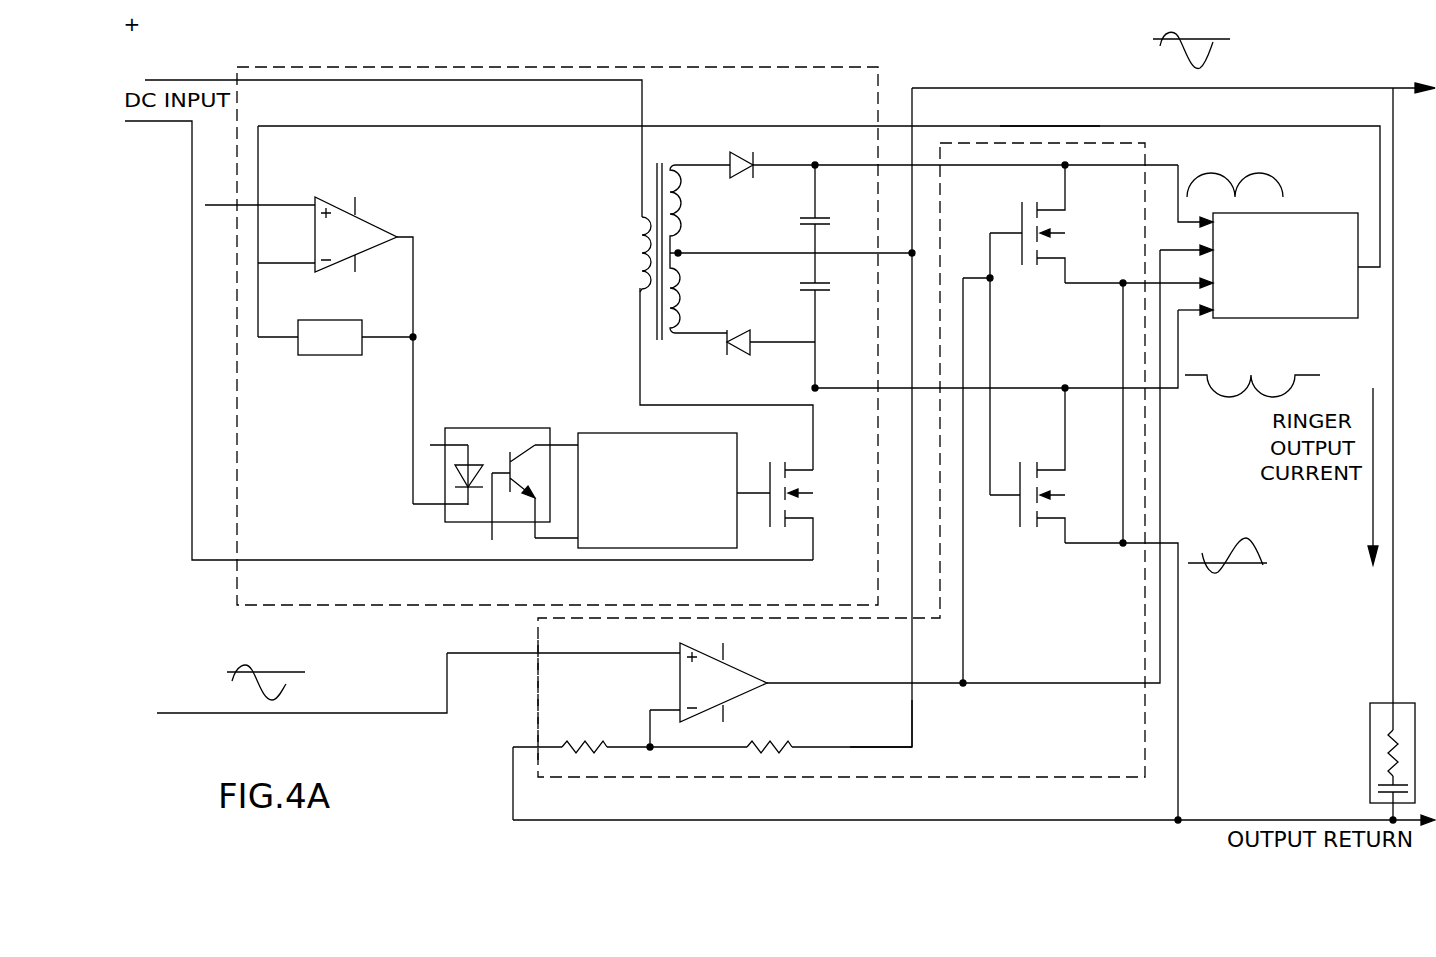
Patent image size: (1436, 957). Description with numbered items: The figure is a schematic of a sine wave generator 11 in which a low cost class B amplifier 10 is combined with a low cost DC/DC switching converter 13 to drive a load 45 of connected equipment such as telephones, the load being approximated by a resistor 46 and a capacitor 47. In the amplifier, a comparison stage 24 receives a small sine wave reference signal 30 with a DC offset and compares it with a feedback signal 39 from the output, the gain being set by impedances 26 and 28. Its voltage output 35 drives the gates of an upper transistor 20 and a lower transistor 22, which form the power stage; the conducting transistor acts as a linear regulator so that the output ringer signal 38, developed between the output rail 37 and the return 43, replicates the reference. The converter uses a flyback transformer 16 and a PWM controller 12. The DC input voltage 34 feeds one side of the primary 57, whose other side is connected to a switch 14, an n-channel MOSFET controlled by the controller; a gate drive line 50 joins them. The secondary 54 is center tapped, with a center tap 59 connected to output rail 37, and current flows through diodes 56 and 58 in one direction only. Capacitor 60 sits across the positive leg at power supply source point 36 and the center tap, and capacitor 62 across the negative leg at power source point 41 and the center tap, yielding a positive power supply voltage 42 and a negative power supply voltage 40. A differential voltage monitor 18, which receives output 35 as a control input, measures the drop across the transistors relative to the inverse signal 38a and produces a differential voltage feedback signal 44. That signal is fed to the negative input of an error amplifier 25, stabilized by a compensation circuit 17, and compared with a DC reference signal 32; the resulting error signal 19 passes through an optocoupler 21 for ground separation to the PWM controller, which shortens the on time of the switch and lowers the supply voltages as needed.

The class B amplifier 10 is at (538, 680).
The sine wave generator 11 is at (930, 45).
The PWM controller 12 is at (612, 432).
The DC/DC switching converter 13 is at (523, 67).
The switch 14 is at (807, 487).
The flyback transformer 16 is at (648, 188).
The compensation circuit 17 is at (335, 357).
The differential voltage monitor 18 is at (1295, 320).
The error signal 19 is at (413, 272).
The upper transistor 20 is at (1047, 230).
The optocoupler 21 is at (498, 428).
The lower transistor 22 is at (1047, 495).
The comparison stage 24 is at (740, 668).
The error amplifier 25 is at (375, 220).
The impedance 26 is at (770, 743).
The impedance 28 is at (590, 738).
The sine wave reference signal 30 is at (284, 684).
The DC reference signal 32 is at (215, 203).
The DC input voltage 34 is at (150, 80).
The voltage output 35 is at (938, 683).
The power supply source point 36 is at (815, 162).
The output rail 37 is at (1278, 88).
The output ringer signal 38 is at (1215, 33).
The inverse signal 38a is at (1247, 567).
The feedback signal 39 is at (910, 733).
The negative power supply voltage 40 is at (1230, 388).
The power source point 41 is at (815, 390).
The positive power supply voltage 42 is at (1257, 173).
The return 43 is at (1245, 818).
The differential voltage feedback signal 44 is at (1043, 127).
The load 45 is at (1410, 703).
The resistor 46 is at (1390, 733).
The capacitor 47 is at (1380, 785).
The gate drive line 50 is at (750, 487).
The secondary 54 is at (675, 212).
The diode 56 is at (743, 150).
The primary 57 is at (643, 250).
The diode 58 is at (742, 358).
The center tap 59 is at (682, 252).
The capacitor 60 is at (823, 215).
The capacitor 62 is at (818, 293).